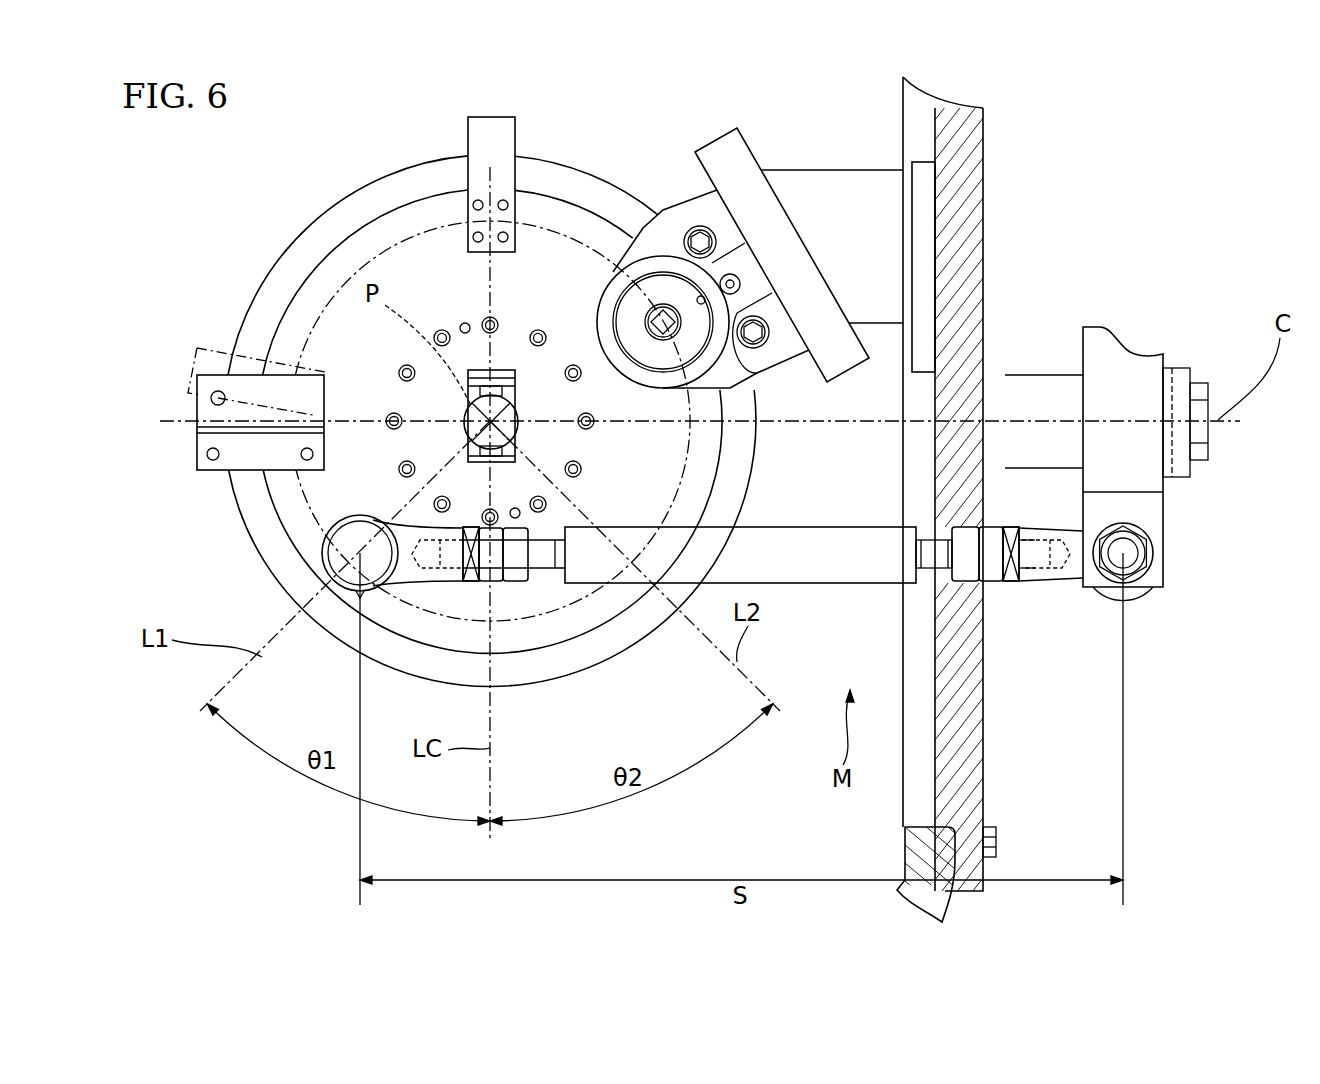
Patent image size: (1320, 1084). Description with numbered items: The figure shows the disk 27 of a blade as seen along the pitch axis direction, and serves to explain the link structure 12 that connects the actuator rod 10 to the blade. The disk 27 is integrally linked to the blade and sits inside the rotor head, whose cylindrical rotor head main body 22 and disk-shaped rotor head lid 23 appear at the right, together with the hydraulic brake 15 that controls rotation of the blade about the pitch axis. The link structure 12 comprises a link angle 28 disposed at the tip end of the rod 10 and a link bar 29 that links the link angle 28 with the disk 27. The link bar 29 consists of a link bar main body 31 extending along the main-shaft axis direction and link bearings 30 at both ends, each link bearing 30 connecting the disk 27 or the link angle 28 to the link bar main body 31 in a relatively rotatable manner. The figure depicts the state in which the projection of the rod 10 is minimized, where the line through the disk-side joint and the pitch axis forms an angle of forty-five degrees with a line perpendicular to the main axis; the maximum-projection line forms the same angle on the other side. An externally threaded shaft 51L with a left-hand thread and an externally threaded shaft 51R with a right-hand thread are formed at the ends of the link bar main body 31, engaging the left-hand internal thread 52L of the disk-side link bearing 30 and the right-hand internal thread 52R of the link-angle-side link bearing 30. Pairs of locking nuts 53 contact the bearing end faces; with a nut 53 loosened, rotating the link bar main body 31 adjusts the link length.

The rod 10 is at (1027, 372).
The link structure 12 is at (1048, 614).
The hydraulic brake 15 is at (657, 236).
The rotor head main body 22 is at (942, 892).
The rotor head lid 23 is at (963, 202).
The disk 27 is at (328, 272).
The link angle 28 is at (1152, 510).
The link bar 29 is at (795, 567).
The link bearing 30 is at (330, 542).
The link bar main body 31 is at (757, 551).
The externally threaded shaft 51L is at (540, 590).
The externally threaded shaft 51R is at (923, 580).
The internal thread 52L is at (437, 590).
The internal thread 52R is at (1042, 582).
The locking nut 53 is at (480, 590).